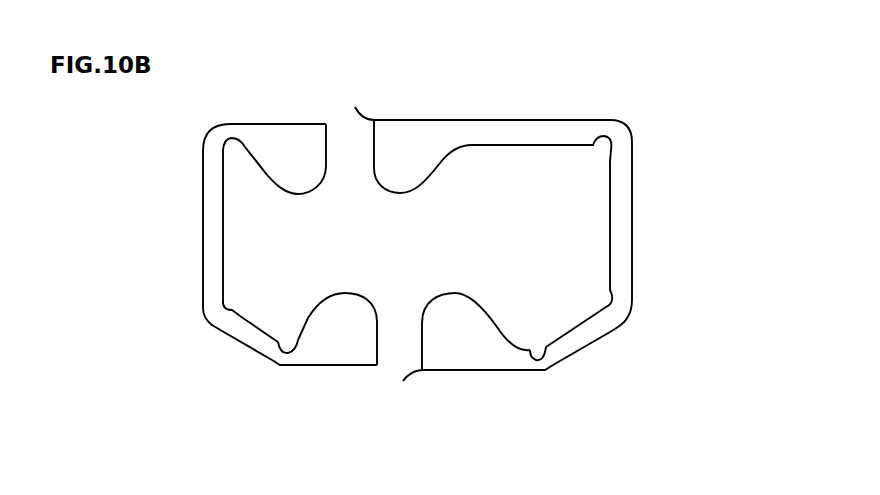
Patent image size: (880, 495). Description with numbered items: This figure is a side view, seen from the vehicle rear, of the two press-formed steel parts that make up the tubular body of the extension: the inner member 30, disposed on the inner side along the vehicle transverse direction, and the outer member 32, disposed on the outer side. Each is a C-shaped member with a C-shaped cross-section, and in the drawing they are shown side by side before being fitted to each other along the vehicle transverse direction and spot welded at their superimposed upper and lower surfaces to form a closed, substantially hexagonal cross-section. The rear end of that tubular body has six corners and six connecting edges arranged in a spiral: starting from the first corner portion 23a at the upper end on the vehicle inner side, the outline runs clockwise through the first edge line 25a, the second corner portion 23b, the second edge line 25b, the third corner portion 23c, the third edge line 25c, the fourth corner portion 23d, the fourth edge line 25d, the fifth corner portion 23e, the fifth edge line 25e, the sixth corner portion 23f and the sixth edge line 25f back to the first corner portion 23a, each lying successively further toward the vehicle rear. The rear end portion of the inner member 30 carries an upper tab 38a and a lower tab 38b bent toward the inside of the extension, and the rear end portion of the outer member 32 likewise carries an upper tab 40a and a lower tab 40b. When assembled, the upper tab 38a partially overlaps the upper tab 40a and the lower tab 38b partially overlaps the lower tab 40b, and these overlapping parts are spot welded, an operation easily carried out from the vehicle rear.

The first corner portion 23a is at (631, 128).
The second corner portion 23b is at (620, 293).
The third corner portion 23c is at (545, 371).
The fourth corner portion 23d is at (282, 368).
The fifth corner portion 23e is at (214, 310).
The sixth corner portion 23f is at (213, 141).
The first edge line 25a is at (619, 214).
The second edge line 25b is at (580, 338).
The third edge line 25c is at (337, 357).
The fourth edge line 25d is at (247, 340).
The fifth edge line 25e is at (207, 183).
The sixth edge line 25f is at (292, 133).
The inner member 30 is at (636, 188).
The outer member 32 is at (201, 250).
The upper tab 38a is at (413, 167).
The lower tab 38b is at (472, 310).
The upper tab 40a is at (268, 165).
The lower tab 40b is at (304, 332).